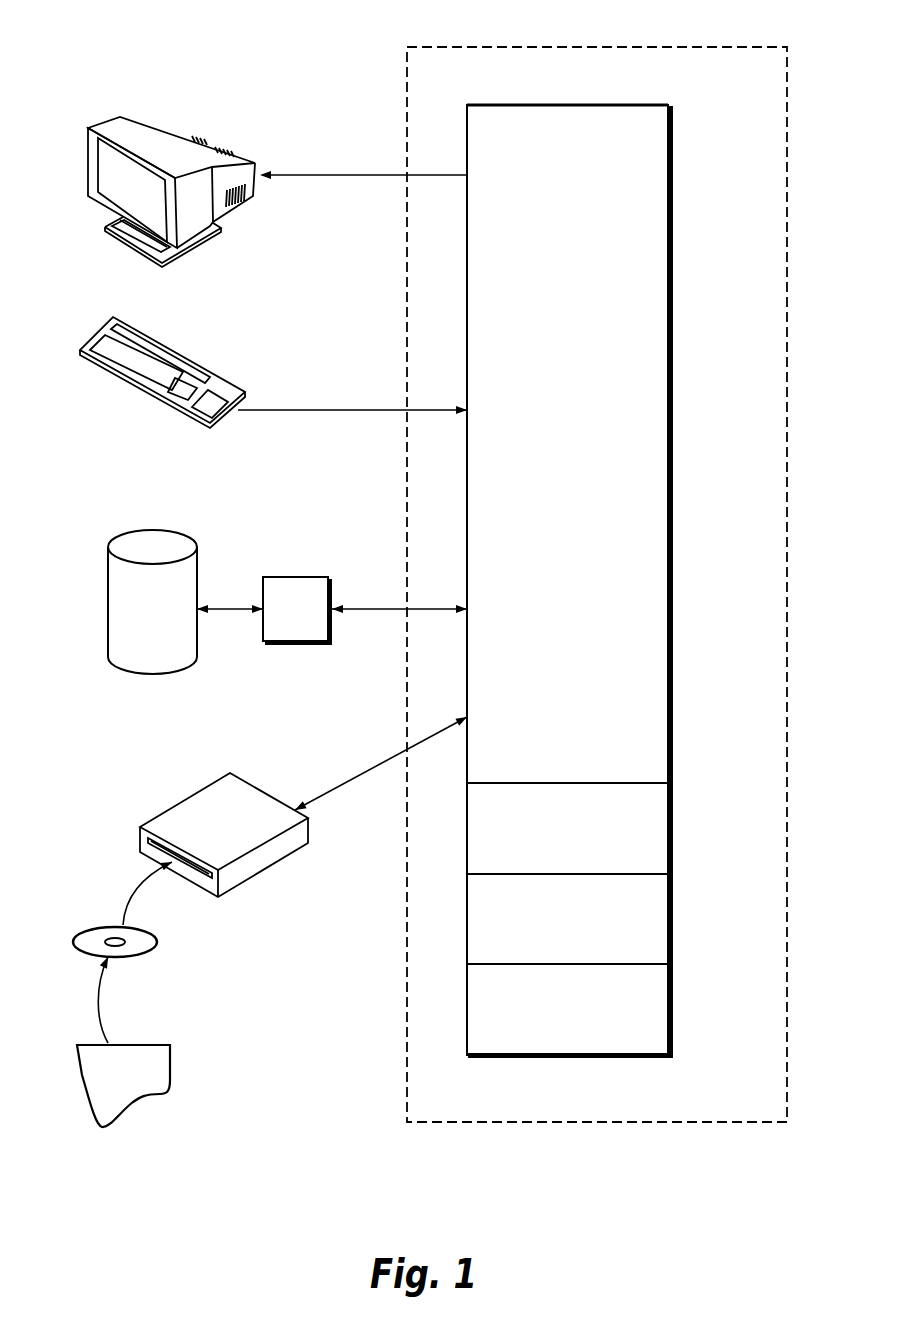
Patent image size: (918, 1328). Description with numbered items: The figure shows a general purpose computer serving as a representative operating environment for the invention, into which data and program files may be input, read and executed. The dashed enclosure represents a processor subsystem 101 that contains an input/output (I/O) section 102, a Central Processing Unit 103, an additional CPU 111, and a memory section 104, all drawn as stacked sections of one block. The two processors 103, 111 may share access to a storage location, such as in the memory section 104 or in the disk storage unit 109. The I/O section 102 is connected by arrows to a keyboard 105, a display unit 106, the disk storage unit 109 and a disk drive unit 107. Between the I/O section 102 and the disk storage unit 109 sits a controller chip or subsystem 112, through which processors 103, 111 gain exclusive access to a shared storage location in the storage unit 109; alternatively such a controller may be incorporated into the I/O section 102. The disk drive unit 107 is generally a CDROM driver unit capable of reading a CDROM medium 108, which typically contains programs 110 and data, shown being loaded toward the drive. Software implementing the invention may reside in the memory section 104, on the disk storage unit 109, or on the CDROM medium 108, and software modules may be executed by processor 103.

The processor subsystem 101 is at (662, 47).
The input/output (I/O) section 102 is at (673, 145).
The Central Processing Unit (CPU) 103 is at (673, 824).
The memory section 104 is at (673, 1008).
The keyboard 105 is at (182, 350).
The display unit 106 is at (163, 122).
The disk drive unit 107 is at (250, 782).
The CDROM medium 108 is at (91, 926).
The disk storage unit 109 is at (191, 508).
The programs 110 is at (145, 1043).
The additional CPU 111 is at (673, 917).
The controller chip or subsystem 112 is at (282, 577).